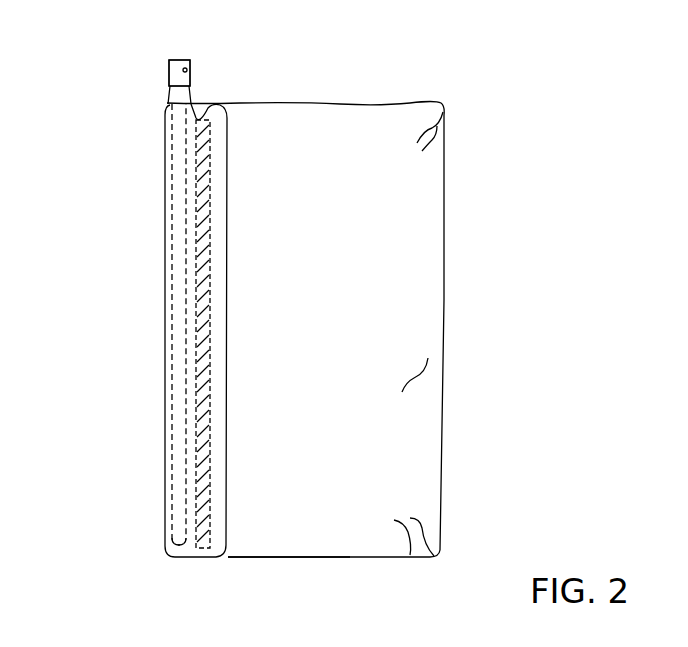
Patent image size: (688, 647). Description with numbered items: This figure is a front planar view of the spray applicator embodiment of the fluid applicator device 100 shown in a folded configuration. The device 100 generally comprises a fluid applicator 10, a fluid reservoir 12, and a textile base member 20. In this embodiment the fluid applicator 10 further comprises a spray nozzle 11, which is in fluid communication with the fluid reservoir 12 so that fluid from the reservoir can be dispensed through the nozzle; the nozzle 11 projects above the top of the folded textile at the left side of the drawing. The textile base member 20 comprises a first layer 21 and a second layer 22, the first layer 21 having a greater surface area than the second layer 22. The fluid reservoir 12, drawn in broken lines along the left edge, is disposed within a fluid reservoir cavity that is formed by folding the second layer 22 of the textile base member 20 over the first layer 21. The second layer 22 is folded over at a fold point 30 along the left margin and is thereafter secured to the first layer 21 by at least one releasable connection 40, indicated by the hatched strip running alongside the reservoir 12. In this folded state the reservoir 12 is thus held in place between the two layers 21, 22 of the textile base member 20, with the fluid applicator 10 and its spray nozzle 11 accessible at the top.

The fluid applicator device 100 is at (545, 92).
The fluid applicator 10 is at (129, 79).
The spray nozzle 11 is at (176, 70).
The fluid reservoir 12 is at (182, 342).
The textile base member 20 is at (418, 284).
The first layer 21 is at (265, 538).
The second layer 22 is at (176, 545).
The fold point 30 is at (166, 437).
The releasable connection 40 is at (199, 123).